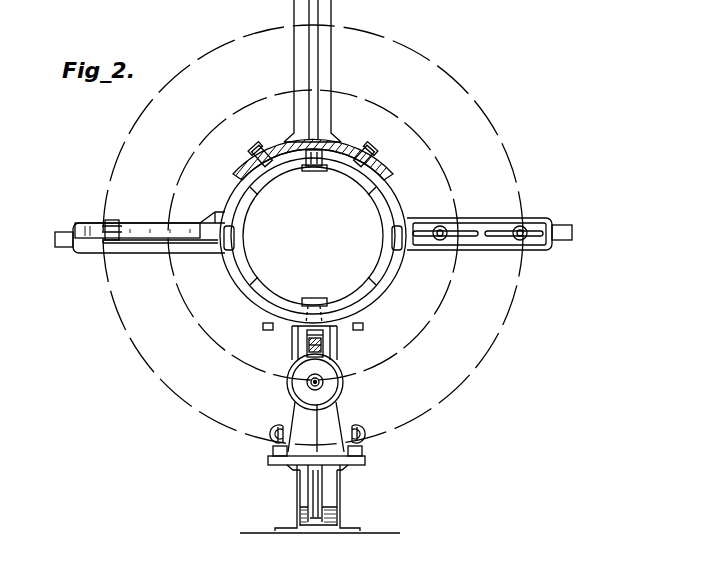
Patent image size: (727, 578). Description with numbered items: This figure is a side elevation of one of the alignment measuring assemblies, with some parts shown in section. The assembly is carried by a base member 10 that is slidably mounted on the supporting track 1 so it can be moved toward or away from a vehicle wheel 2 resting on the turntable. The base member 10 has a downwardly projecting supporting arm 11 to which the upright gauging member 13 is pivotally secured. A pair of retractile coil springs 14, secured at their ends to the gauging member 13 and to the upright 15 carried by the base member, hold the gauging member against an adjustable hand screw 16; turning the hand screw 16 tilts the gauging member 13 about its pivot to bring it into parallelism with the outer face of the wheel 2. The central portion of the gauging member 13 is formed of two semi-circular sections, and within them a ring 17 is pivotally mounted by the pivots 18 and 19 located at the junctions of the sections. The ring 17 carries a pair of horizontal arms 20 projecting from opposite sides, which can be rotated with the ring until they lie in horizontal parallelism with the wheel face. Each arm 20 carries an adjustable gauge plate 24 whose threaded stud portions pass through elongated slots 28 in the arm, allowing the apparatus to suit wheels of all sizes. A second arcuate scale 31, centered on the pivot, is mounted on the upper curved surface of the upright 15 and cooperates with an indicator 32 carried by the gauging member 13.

The track 1 is at (296, 484).
The vehicle wheel 2 is at (468, 108).
The base member 10 is at (314, 462).
The supporting arm 11 is at (322, 485).
The gauging member 13 is at (320, 14).
The retractile coil springs 14 is at (355, 441).
The upright 15 is at (318, 422).
The hand screw 16 is at (341, 369).
The ring 17 is at (390, 252).
The pivot 18 is at (316, 170).
The pivot 19 is at (319, 297).
The horizontal arms 20 is at (120, 256).
The gauge plate 24 is at (62, 248).
The elongated slots 28 is at (505, 240).
The second arcuate scale 31 is at (325, 345).
The indicator 32 is at (325, 328).